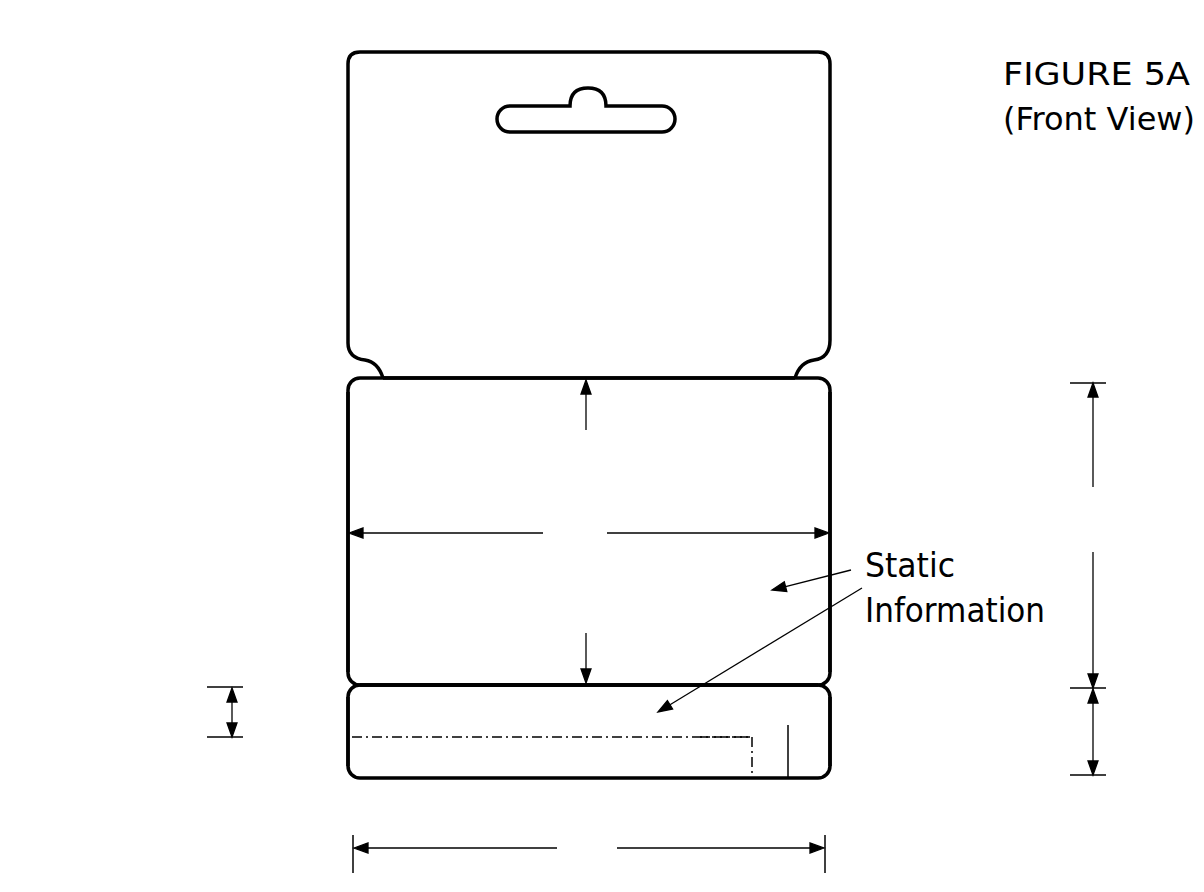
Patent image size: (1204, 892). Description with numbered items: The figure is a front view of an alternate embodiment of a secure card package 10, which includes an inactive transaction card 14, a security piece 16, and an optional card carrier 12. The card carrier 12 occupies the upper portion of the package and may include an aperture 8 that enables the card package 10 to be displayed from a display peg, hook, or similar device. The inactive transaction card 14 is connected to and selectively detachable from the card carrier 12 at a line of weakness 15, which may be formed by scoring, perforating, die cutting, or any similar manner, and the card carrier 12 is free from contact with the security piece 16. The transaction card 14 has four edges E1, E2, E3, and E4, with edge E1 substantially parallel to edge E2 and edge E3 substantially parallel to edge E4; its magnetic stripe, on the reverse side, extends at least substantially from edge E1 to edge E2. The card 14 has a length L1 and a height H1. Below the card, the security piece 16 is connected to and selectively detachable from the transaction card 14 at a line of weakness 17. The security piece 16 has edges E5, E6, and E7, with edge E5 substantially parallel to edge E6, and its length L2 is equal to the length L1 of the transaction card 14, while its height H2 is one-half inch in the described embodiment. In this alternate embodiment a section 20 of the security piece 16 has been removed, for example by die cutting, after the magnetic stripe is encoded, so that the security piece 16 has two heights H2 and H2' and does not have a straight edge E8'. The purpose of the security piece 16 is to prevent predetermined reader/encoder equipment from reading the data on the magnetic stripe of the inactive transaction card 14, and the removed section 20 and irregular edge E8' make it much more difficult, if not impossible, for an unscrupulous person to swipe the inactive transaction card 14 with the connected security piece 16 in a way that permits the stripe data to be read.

The secure card package 10 is at (719, 41).
The card carrier 12 is at (365, 148).
The aperture 8 is at (702, 127).
The inactive transaction card 14 is at (365, 594).
The line of weakness 15 is at (693, 368).
The security piece 16 is at (350, 720).
The line of weakness 17 is at (848, 686).
The section 20 is at (364, 772).
The edge E1 is at (849, 428).
The edge E2 is at (333, 405).
The edge E3 is at (604, 411).
The edge E4 is at (599, 648).
The edge E5 is at (850, 750).
The edge E6 is at (334, 682).
The edge E7 is at (512, 696).
The edge E8' is at (755, 724).
The height H1 is at (1092, 535).
The height H2 is at (1098, 732).
The height H2' is at (214, 712).
The length L1 is at (589, 531).
The length L2 is at (589, 853).